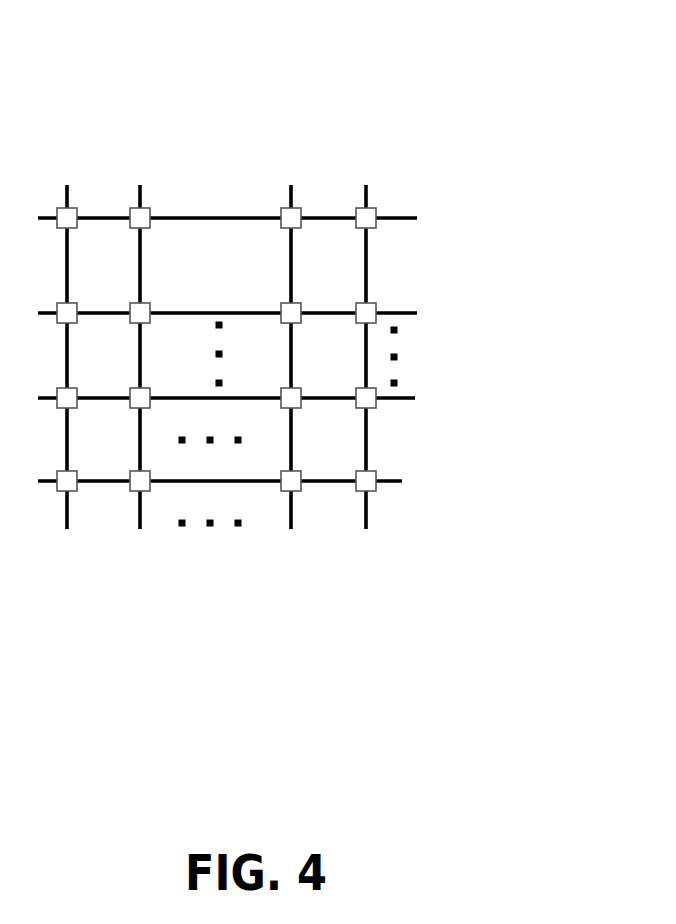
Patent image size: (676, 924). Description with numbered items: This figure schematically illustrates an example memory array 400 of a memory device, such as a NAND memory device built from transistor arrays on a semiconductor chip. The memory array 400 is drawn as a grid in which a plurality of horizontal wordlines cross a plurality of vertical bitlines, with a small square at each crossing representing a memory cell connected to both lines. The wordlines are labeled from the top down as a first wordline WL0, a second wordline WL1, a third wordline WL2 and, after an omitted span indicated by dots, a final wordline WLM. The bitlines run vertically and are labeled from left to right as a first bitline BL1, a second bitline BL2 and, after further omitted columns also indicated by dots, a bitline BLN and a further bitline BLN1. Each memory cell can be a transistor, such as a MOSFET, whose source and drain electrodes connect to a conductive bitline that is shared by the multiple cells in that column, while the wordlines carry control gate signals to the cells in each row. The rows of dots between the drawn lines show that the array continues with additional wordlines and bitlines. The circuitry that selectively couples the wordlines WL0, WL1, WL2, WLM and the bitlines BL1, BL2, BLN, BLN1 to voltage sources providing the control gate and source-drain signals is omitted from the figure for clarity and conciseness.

The memory array 400 is at (433, 91).
The wordline WL0 is at (251, 219).
The wordline WL1 is at (251, 313).
The wordline WL2 is at (251, 399).
The wordline WLM is at (252, 482).
The bitline BL1 is at (63, 376).
The bitline BL2 is at (139, 376).
The bitline BLN is at (285, 376).
The bitline BLN1 is at (357, 376).